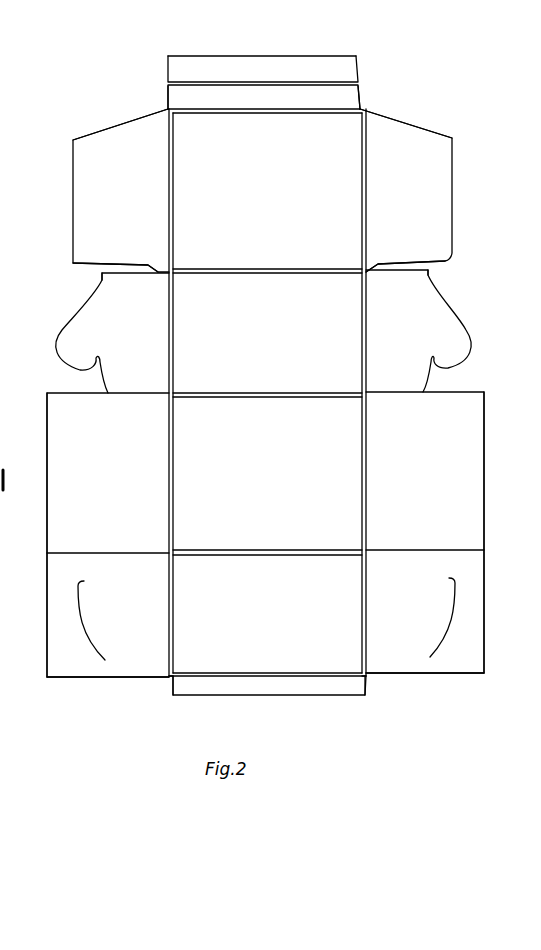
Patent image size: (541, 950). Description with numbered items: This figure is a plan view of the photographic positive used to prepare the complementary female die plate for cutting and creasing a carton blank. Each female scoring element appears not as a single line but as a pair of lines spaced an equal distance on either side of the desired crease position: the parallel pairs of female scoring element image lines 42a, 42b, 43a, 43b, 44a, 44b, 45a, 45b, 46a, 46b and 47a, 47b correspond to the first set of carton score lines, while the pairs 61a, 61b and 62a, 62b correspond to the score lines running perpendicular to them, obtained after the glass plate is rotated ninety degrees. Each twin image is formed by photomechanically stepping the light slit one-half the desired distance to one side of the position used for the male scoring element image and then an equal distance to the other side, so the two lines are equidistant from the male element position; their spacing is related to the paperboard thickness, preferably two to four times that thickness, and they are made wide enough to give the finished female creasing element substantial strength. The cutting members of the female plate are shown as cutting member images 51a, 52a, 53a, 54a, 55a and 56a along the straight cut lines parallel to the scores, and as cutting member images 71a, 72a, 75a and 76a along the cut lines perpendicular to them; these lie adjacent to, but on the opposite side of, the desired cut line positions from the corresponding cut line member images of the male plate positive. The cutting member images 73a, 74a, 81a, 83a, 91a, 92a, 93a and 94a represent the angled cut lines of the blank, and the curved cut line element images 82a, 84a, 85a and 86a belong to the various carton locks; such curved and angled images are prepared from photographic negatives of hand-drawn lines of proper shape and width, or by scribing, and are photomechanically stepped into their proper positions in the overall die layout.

The cutting member image 56a is at (284, 56).
The female scoring element image line 47a is at (268, 82).
The female scoring element image line 47b is at (268, 86).
The cutting member image 73a is at (168, 100).
The cutting member image 74a is at (361, 86).
The female scoring element image line 46a is at (287, 108).
The female scoring element image line 46b is at (285, 114).
The cutting member image 92a is at (125, 123).
The cutting member image 91a is at (410, 123).
The cutting member image 72a is at (73, 215).
The cutting member image 75a is at (453, 211).
The cutting member image 83a is at (132, 263).
The cutting member image 81a is at (425, 261).
The cutting member image 55a is at (108, 276).
The curved cut line element image 84a is at (78, 309).
The curved cut line element image 82a is at (455, 308).
The cutting member image 54a is at (73, 393).
The female scoring element image line 61a is at (169, 459).
The female scoring element image line 61b is at (173, 461).
The female scoring element image line 62a is at (362, 459).
The female scoring element image line 62b is at (366, 460).
The female scoring element image line 45a is at (285, 269).
The female scoring element image line 45b is at (285, 274).
The female scoring element image line 44a is at (290, 393).
The female scoring element image line 44b is at (290, 398).
The female scoring element image line 43a is at (290, 550).
The female scoring element image line 43b is at (290, 556).
The female scoring element image line 42a is at (285, 673).
The female scoring element image line 42b is at (285, 677).
The cutting member image 53a is at (118, 553).
The cutting member image 71a is at (47, 591).
The cutting member image 76a is at (485, 590).
The curved cut line element image 86a is at (80, 609).
The curved cut line element image 85a is at (455, 609).
The cutting member image 52a is at (73, 678).
The cutting member image 94a is at (173, 692).
The cutting member image 93a is at (366, 690).
The cutting member image 51a is at (215, 696).